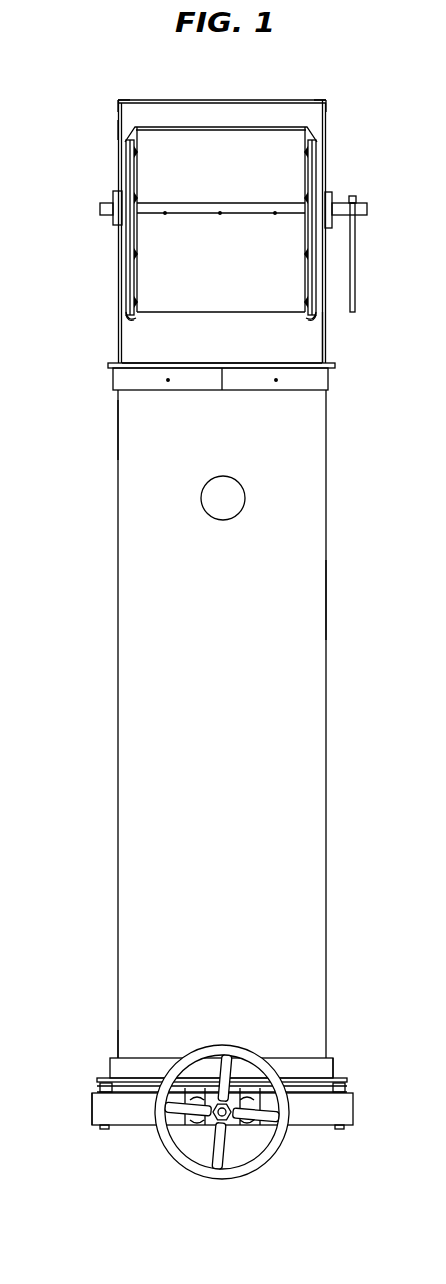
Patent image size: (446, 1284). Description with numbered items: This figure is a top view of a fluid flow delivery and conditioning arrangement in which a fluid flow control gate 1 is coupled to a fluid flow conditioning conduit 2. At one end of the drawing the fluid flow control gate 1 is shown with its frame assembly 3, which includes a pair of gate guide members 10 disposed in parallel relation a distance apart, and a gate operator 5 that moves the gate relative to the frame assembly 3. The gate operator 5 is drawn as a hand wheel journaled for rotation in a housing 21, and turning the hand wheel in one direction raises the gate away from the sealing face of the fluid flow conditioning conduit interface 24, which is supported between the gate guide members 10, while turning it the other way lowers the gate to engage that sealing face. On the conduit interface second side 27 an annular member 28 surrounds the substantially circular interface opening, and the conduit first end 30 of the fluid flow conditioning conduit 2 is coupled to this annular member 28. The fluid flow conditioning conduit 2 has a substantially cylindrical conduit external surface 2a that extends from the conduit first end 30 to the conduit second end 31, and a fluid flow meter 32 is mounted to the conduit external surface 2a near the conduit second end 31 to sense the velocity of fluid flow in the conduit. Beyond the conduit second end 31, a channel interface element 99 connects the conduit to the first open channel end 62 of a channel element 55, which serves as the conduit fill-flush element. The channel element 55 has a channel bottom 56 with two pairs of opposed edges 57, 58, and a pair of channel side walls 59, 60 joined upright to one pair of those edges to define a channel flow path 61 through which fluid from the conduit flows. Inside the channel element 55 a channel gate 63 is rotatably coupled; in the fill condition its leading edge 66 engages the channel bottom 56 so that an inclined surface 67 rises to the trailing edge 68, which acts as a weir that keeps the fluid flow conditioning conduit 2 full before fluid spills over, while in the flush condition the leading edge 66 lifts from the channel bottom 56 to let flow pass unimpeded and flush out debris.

The fluid flow control gate 1 is at (78, 1105).
The fluid flow conditioning conduit 2 is at (352, 713).
The conduit external surface 2a is at (311, 594).
The frame assembly 3 is at (364, 1108).
The gate operator 5 is at (227, 1127).
The gate guide members 10 is at (92, 1120).
The housing 21 is at (206, 1130).
The fluid flow conditioning conduit interface 24 is at (344, 1067).
The conduit interface second side 27 is at (288, 1073).
The annular member 28 is at (122, 1068).
The conduit first end 30 is at (118, 1040).
The conduit second end 31 is at (118, 435).
The fluid flow meter 32 is at (200, 495).
The channel element 55 is at (118, 278).
The channel bottom 56 is at (148, 112).
The opposed edge 57 is at (123, 110).
The opposed edge 58 is at (318, 100).
The channel side wall 59 is at (328, 122).
The channel side wall 60 is at (118, 128).
The channel flow path 61 is at (233, 351).
The first open channel end 62 is at (326, 350).
The channel gate 63 is at (276, 125).
The leading edge 66 is at (162, 312).
The inclined surface 67 is at (175, 239).
The trailing edge 68 is at (190, 126).
The channel interface element 99 is at (322, 384).